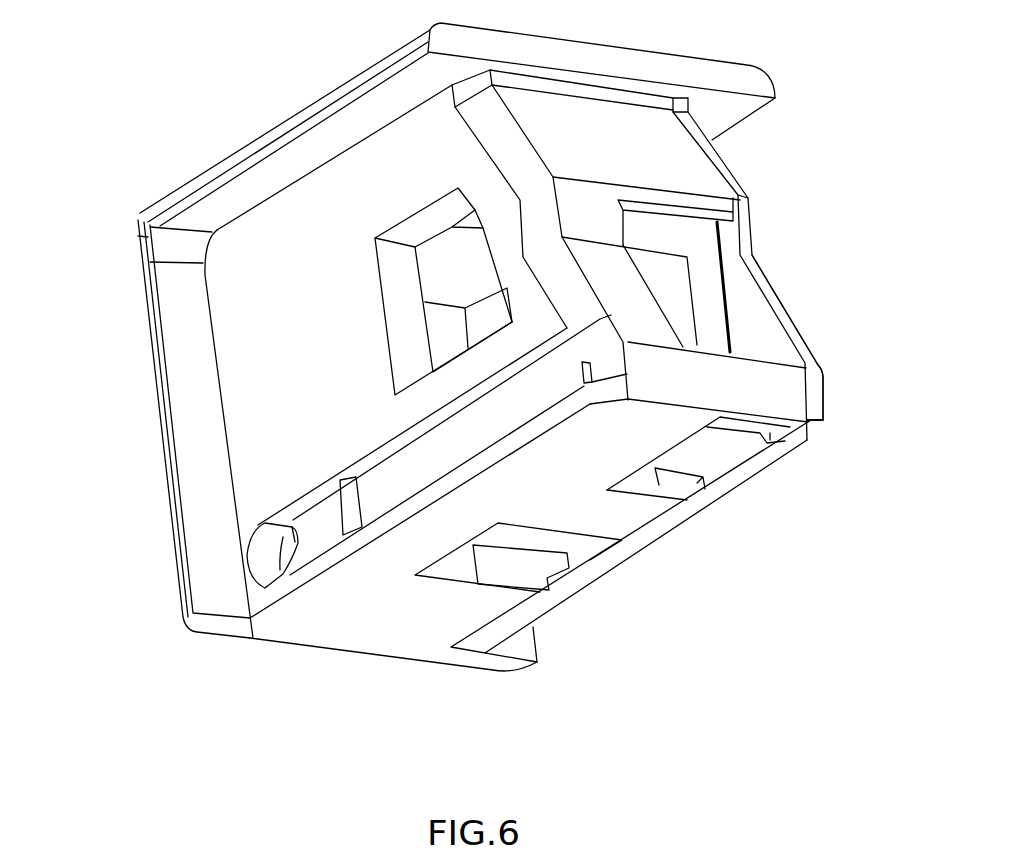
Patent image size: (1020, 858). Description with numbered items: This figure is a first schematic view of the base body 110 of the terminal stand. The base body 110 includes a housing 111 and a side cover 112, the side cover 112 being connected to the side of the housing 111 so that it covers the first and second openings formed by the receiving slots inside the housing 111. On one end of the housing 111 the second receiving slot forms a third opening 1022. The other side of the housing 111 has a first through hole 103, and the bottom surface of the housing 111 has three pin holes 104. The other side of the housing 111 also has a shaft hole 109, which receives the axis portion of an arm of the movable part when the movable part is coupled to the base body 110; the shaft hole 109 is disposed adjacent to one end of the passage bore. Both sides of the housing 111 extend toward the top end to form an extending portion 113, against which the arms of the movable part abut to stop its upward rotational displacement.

The base body 110 is at (157, 124).
The housing 111 is at (163, 248).
The extending portion 113 is at (250, 182).
The first through hole 103 is at (400, 267).
The third opening 1022 is at (670, 289).
The side cover 112 is at (818, 393).
The pin hole 104 is at (543, 557).
The shaft hole 109 is at (272, 578).